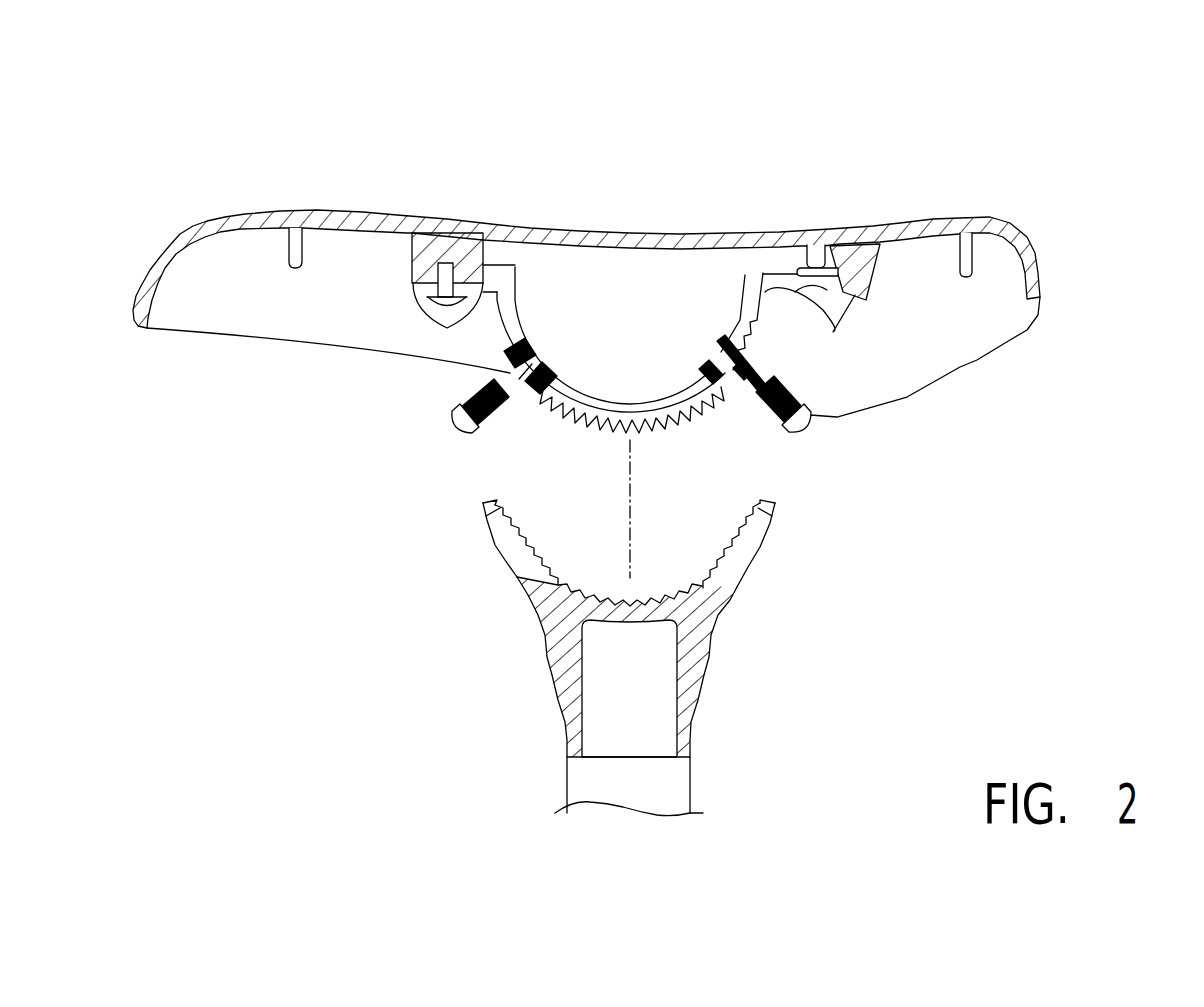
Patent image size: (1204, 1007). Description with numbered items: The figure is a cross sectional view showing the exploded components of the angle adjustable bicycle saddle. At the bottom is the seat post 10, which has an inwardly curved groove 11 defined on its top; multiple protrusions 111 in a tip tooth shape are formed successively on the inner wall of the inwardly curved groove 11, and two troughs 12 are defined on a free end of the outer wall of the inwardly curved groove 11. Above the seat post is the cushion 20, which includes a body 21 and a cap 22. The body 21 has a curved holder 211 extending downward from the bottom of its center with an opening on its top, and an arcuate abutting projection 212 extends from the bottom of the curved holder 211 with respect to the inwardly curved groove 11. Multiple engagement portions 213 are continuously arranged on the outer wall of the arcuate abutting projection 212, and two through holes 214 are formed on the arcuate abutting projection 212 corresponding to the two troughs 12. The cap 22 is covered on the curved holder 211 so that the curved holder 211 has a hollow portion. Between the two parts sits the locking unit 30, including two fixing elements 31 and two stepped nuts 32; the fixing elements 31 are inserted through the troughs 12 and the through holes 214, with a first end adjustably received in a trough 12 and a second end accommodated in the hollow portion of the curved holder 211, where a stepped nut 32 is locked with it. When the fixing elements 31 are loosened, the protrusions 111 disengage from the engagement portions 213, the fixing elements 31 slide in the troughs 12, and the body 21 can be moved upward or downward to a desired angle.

The seat post 10 is at (773, 703).
The inwardly curved groove 11 is at (647, 552).
The troughs 12 is at (517, 568).
The protrusions 111 is at (557, 582).
The cushion 20 is at (1103, 198).
The body 21 is at (968, 230).
The cap 22 is at (665, 240).
The curved holder 211 is at (573, 295).
The arcuate abutting projection 212 is at (752, 332).
The engagement portions 213 is at (633, 427).
The through holes 214 is at (530, 370).
The locking unit 30 is at (812, 437).
The fixing elements 31 is at (812, 418).
The stepped nuts 32 is at (550, 372).